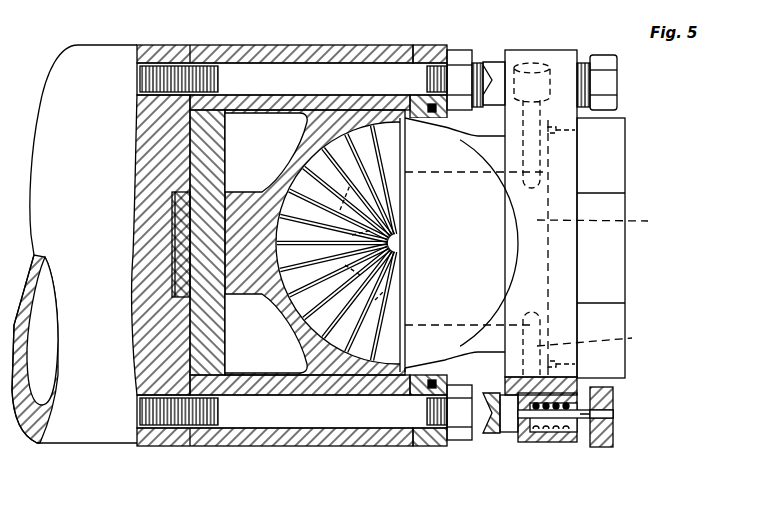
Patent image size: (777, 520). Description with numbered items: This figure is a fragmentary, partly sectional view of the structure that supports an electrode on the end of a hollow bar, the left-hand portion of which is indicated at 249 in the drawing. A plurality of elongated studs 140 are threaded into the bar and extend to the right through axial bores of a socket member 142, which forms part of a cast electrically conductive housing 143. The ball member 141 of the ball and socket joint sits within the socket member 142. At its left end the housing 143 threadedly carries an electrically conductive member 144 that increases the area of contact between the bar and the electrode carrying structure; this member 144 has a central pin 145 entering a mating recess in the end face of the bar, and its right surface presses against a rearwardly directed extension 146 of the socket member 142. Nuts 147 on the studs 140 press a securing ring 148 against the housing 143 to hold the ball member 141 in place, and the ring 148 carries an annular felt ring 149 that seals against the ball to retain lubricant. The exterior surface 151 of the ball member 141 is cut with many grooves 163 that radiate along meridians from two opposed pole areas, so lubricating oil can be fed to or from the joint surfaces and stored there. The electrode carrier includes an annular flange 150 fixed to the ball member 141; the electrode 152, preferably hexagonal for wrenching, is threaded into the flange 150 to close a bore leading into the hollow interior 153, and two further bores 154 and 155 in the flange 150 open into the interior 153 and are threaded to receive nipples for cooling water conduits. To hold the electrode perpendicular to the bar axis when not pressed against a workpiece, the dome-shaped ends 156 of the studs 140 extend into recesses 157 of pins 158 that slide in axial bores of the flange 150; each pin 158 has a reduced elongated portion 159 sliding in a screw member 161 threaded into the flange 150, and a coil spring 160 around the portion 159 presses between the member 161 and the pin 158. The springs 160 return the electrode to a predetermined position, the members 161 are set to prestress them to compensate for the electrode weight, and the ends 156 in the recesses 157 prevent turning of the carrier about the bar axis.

The handle 249 is at (62, 62).
The elongated studs 140 is at (250, 72).
The ball member 141 is at (414, 127).
The socket member 142 is at (318, 346).
The electrically conductive housing 143 is at (308, 50).
The electrically conductive member 144 is at (198, 141).
The central pin 145 is at (182, 224).
The rearwardly directed extension 146 is at (244, 205).
The nuts 147 is at (457, 60).
The securing ring 148 is at (430, 57).
The annular felt ring 149 is at (450, 92).
The annular flange 150 is at (563, 62).
The exterior surface 151 is at (308, 318).
The electrode 152 is at (614, 133).
The hollow interior 153 is at (609, 223).
The bore 154 is at (531, 72).
The bore 155 is at (604, 334).
The ends of the studs 156 is at (486, 428).
The recesses 157 is at (508, 428).
The pins 158 is at (522, 430).
The elongated portion of reduced cross section 159 is at (600, 415).
The coil spring 160 is at (565, 432).
The screw member 161 is at (614, 393).
The grooves 163 is at (404, 286).